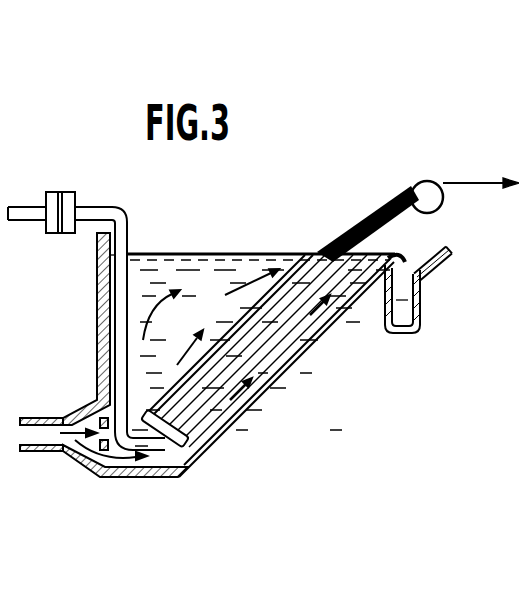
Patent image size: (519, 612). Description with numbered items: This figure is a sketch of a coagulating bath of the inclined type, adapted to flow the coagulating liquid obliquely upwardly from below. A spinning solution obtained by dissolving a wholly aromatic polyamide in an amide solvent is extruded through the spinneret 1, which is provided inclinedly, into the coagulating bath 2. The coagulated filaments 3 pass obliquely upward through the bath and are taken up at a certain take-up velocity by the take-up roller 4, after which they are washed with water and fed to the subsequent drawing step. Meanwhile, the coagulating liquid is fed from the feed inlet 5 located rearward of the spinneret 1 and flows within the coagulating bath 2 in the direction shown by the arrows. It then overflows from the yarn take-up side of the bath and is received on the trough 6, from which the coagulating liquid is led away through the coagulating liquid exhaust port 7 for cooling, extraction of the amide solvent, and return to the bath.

The spinneret 1 is at (190, 452).
The coagulating bath 2 is at (273, 357).
The filaments 3 is at (232, 345).
The take-up roller 4 is at (422, 193).
The feed inlet for the coagulating liquid 5 is at (73, 450).
The trough for receiving the coagulating liquid that has overflowed 6 is at (447, 256).
The coagulating liquid exhaust port 7 is at (420, 308).